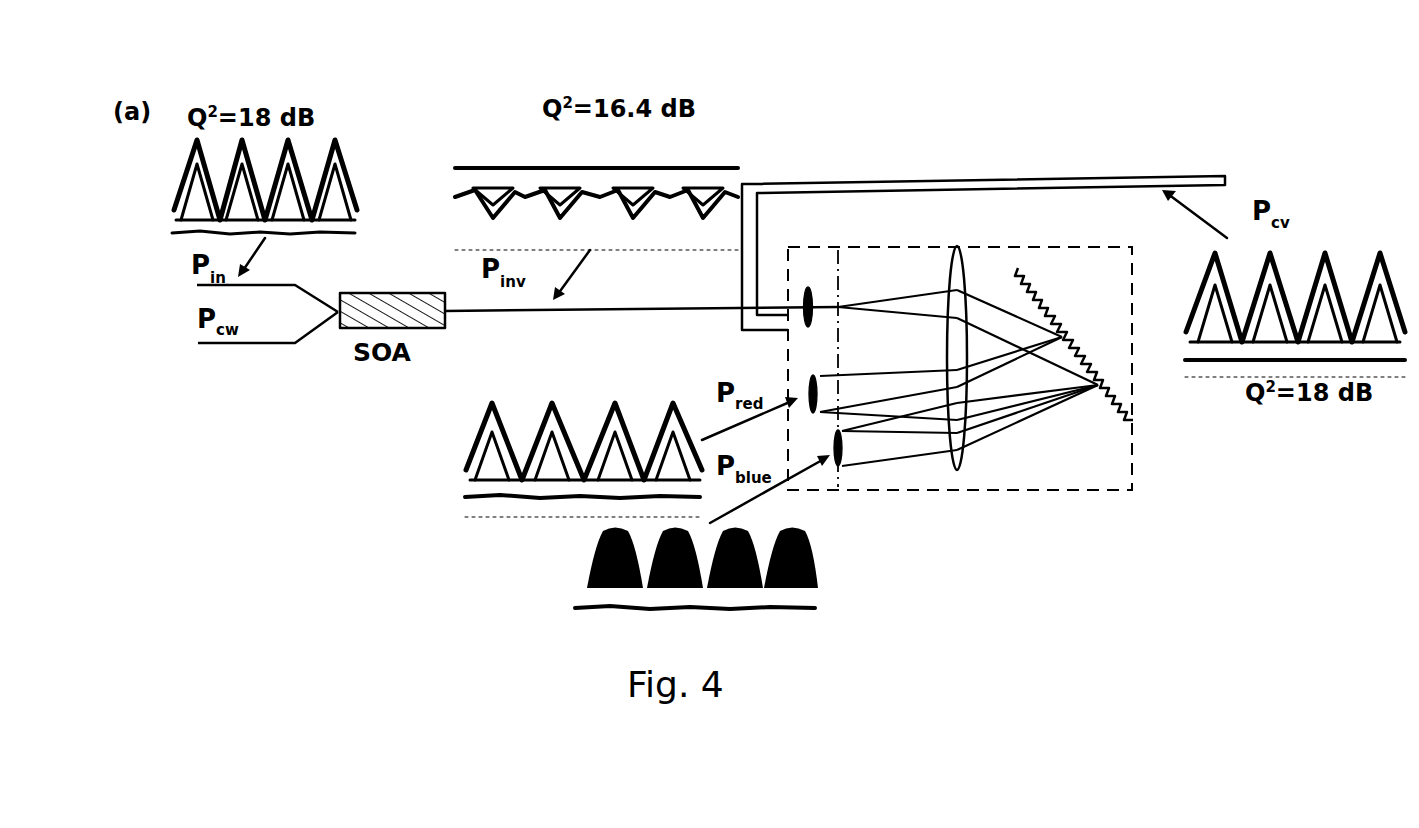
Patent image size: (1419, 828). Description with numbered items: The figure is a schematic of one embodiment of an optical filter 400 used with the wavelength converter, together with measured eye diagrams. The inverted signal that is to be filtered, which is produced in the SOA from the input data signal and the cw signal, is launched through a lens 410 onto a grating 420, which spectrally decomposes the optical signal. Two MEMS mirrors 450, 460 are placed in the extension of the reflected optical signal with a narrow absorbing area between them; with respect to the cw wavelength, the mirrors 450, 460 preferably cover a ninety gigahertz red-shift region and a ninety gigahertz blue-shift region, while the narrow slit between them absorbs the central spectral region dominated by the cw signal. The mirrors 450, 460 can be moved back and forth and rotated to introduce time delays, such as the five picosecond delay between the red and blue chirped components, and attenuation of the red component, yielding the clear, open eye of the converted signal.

The optical filter 400 is at (893, 238).
The lens 410 is at (957, 272).
The grating 420 is at (1050, 304).
The MEMS mirror 450 is at (816, 392).
The MEMS mirror 460 is at (843, 452).